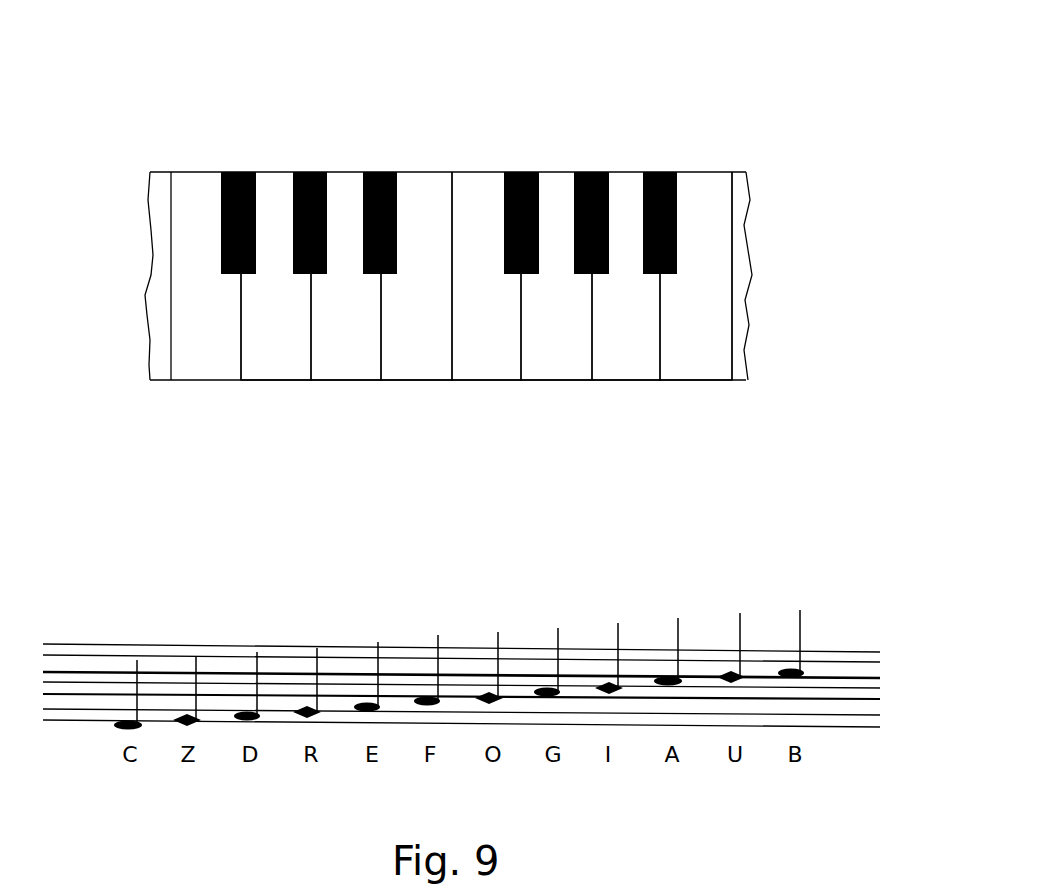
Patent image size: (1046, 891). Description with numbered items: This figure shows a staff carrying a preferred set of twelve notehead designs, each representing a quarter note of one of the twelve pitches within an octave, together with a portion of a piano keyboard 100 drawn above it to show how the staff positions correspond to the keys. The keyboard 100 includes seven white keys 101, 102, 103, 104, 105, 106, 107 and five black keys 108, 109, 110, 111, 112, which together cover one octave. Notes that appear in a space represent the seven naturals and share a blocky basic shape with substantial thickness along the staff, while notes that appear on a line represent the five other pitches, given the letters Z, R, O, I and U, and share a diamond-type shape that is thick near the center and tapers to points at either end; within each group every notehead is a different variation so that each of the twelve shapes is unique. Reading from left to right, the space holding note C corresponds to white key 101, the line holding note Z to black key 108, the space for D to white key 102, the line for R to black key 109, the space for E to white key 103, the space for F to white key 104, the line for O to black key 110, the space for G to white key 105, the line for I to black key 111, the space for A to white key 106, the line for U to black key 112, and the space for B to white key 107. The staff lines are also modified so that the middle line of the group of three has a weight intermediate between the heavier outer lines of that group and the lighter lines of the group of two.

The piano keyboard 100 is at (460, 152).
The white key 101 is at (277, 372).
The white key 102 is at (347, 372).
The white key 103 is at (415, 372).
The white key 104 is at (477, 372).
The white key 105 is at (552, 372).
The white key 106 is at (625, 372).
The white key 107 is at (693, 372).
The black key 108 is at (307, 171).
The black key 109 is at (380, 171).
The black key 110 is at (517, 171).
The black key 111 is at (587, 171).
The black key 112 is at (655, 171).